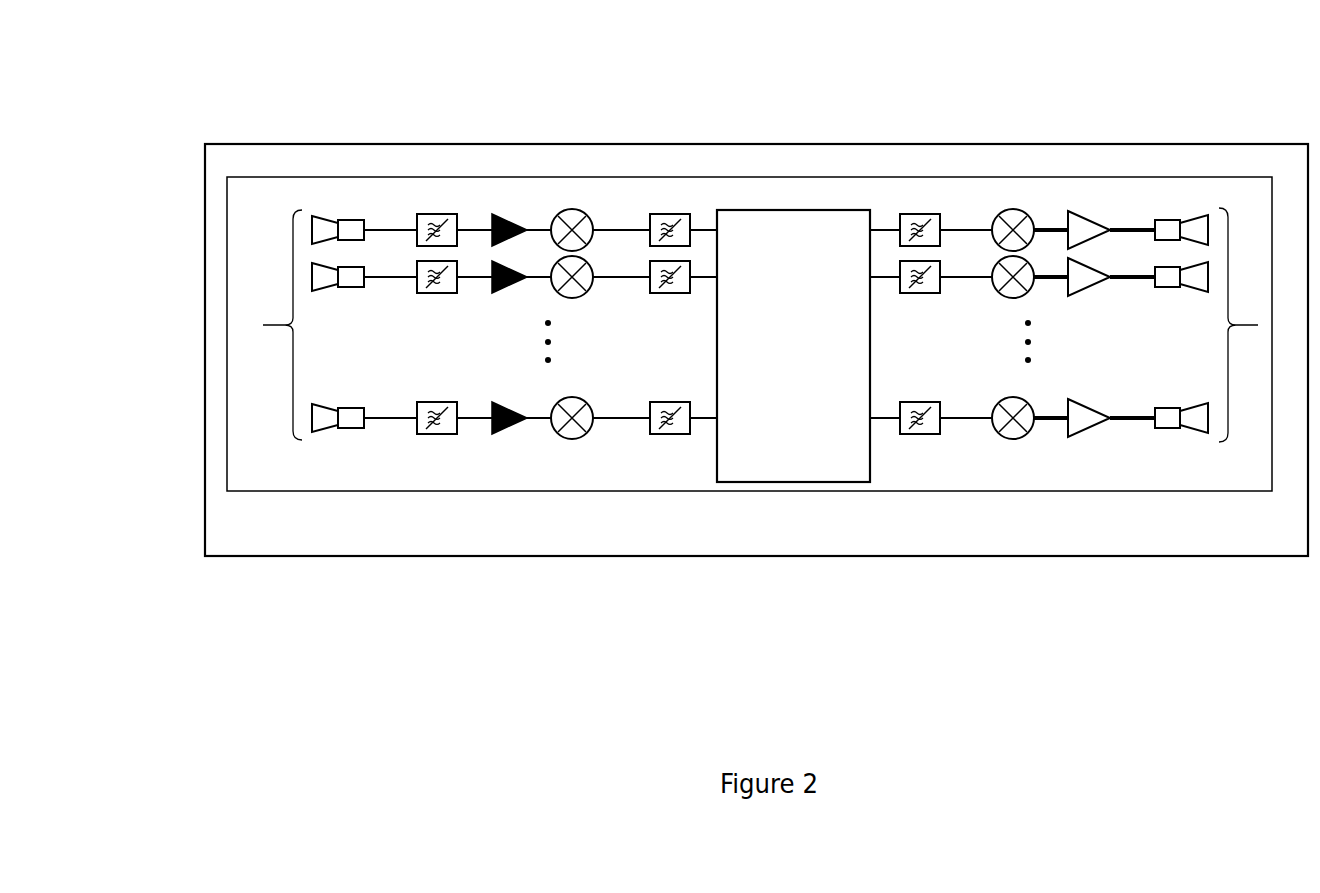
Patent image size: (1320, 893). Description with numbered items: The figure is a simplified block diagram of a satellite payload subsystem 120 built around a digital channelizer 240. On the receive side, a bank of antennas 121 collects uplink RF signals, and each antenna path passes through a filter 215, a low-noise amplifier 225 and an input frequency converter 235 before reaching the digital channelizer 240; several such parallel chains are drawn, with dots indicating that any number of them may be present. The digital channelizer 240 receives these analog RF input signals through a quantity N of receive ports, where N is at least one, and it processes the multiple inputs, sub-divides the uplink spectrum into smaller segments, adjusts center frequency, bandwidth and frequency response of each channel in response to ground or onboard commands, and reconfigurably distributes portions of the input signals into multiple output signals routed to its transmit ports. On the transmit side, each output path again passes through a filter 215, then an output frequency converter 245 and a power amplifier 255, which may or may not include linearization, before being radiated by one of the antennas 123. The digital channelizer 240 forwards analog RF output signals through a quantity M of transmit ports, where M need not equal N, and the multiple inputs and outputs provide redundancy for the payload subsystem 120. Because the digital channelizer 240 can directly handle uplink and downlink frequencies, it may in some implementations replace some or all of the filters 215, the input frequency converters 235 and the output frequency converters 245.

The satellite payload subsystem 120 is at (183, 89).
The antennas 121 is at (339, 297).
The filters 215 is at (430, 297).
The low-noise amplifiers 225 is at (499, 297).
The input frequency converters 235 is at (576, 299).
The digital channelizer 240 is at (793, 346).
The output frequency converters 245 is at (1002, 299).
The power amplifiers 255 is at (1086, 298).
The antennas 123 is at (1175, 298).